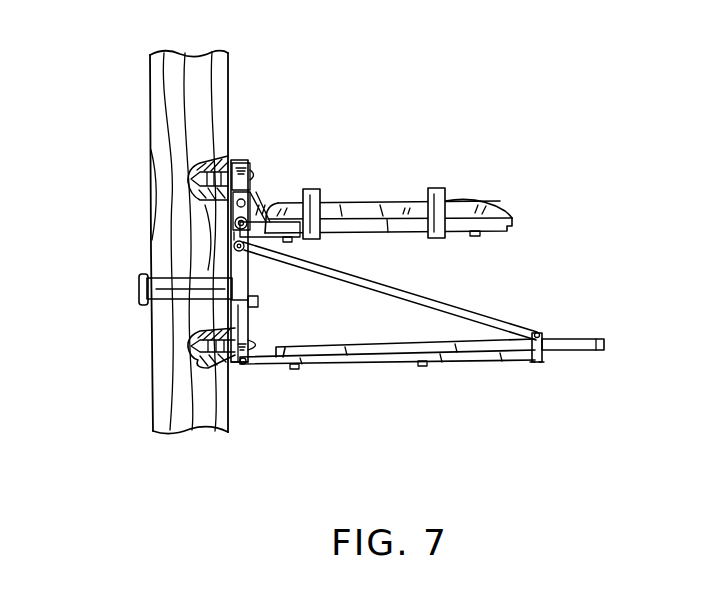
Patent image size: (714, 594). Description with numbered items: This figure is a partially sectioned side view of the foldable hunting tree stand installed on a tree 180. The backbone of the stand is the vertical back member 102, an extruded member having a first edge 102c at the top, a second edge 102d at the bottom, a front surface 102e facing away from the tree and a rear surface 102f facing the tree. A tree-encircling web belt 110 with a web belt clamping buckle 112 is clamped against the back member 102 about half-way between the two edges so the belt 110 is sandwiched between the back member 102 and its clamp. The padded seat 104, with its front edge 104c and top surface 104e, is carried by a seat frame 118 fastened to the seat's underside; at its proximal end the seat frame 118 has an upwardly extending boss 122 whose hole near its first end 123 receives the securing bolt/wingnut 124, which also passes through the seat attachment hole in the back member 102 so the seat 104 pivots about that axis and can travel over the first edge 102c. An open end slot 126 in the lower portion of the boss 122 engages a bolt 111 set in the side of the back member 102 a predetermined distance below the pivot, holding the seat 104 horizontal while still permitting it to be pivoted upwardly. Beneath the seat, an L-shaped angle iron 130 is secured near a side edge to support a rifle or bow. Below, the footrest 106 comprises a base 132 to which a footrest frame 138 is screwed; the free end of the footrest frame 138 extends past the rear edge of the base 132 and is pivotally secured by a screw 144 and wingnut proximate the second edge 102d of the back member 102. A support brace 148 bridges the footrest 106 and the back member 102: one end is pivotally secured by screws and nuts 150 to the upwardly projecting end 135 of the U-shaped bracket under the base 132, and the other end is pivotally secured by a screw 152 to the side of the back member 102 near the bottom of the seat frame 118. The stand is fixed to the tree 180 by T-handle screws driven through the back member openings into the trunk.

The tree 180 is at (232, 57).
The vertical back member 102 is at (190, 348).
The first edge 102c is at (240, 162).
The second edge 102d is at (246, 366).
The front surface 102e is at (250, 318).
The rear surface 102f is at (233, 318).
The first end of boss 123 is at (251, 168).
The upwardly extending boss 122 is at (247, 198).
The bolt 111 is at (250, 222).
The securing bolt/wingnut 124 is at (190, 197).
The open end slot 126 is at (228, 210).
The screw 152 is at (234, 246).
The web belt clamping buckle 112 is at (139, 284).
The web belt 110 is at (152, 290).
The seat 104 is at (480, 202).
The front edge 104c is at (512, 220).
The top surface 104e is at (385, 202).
The L-shaped angle iron 130 is at (320, 194).
The seat frame 118 is at (500, 232).
The support brace 148 is at (396, 284).
The footrest frame 138 is at (345, 358).
The base 132 is at (440, 350).
The screws and nuts 150 is at (541, 333).
The end of U-shaped bracket 135 is at (545, 336).
The footrest 106 is at (583, 351).
The screw 144 is at (248, 364).